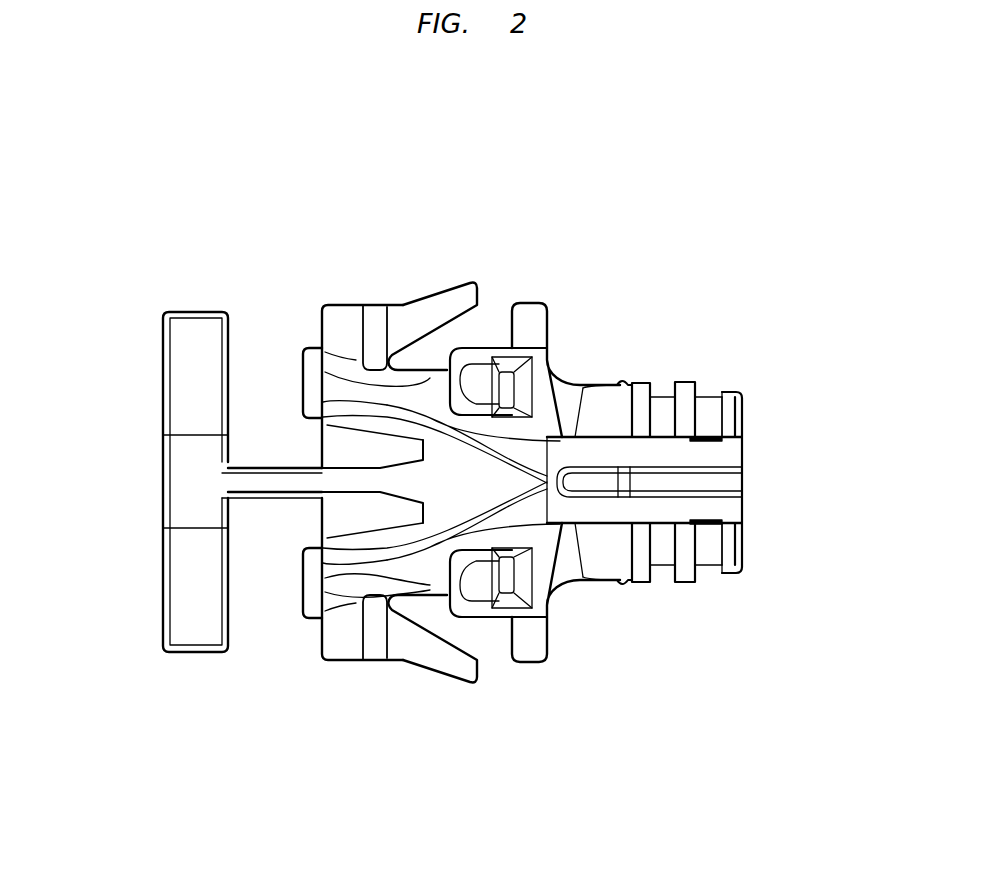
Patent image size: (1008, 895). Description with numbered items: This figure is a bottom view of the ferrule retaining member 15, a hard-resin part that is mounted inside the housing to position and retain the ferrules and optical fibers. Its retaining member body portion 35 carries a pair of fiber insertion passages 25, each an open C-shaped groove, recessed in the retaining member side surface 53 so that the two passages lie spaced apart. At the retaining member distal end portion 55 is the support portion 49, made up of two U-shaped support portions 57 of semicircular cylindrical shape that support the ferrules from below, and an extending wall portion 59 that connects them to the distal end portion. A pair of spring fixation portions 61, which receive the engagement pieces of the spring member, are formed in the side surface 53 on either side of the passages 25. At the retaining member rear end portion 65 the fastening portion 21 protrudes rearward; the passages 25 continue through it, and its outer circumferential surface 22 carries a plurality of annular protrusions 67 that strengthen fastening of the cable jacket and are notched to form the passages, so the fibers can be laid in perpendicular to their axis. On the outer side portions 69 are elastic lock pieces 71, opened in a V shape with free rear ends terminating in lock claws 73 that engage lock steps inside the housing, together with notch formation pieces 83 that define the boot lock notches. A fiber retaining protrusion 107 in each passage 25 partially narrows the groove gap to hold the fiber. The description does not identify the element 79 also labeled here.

The ferrule retaining member 15 is at (645, 181).
The fastening portion 21 is at (747, 396).
The outer circumferential surface 22 is at (627, 385).
The fiber insertion passages 25 is at (660, 450).
The retaining member body portion 35 is at (333, 305).
The support portion 49 is at (145, 427).
The retaining member side surface 53 is at (503, 482).
The retaining member distal end portion 55 is at (322, 523).
The U-shaped support portions 57 is at (163, 376).
The extending wall portion 59 is at (251, 478).
The spring fixation portions 61 is at (503, 388).
The retaining member rear end portion 65 is at (563, 388).
The annular protrusions 67 is at (687, 418).
The outer side portions 69 is at (382, 322).
The elastic lock pieces 71 is at (388, 308).
The lock claws 73 is at (473, 281).
The elastic arm 79 is at (485, 286).
The notch formation pieces 83 is at (538, 302).
The fiber retaining protrusion 107 is at (708, 443).